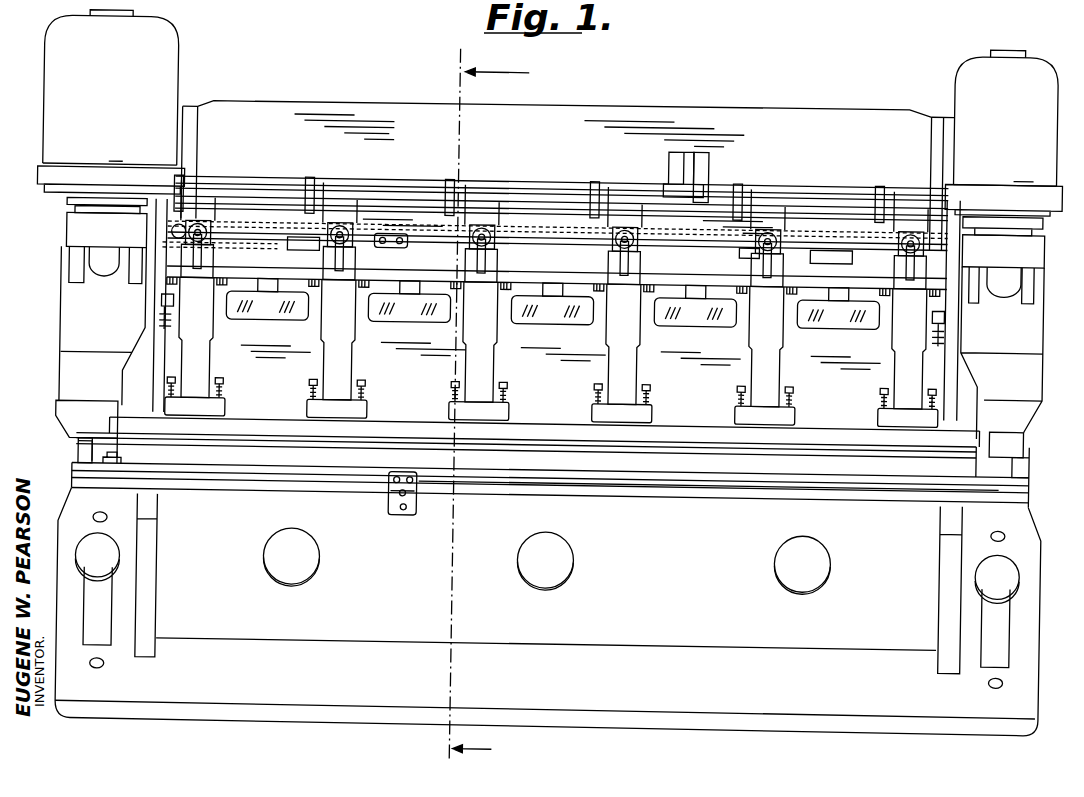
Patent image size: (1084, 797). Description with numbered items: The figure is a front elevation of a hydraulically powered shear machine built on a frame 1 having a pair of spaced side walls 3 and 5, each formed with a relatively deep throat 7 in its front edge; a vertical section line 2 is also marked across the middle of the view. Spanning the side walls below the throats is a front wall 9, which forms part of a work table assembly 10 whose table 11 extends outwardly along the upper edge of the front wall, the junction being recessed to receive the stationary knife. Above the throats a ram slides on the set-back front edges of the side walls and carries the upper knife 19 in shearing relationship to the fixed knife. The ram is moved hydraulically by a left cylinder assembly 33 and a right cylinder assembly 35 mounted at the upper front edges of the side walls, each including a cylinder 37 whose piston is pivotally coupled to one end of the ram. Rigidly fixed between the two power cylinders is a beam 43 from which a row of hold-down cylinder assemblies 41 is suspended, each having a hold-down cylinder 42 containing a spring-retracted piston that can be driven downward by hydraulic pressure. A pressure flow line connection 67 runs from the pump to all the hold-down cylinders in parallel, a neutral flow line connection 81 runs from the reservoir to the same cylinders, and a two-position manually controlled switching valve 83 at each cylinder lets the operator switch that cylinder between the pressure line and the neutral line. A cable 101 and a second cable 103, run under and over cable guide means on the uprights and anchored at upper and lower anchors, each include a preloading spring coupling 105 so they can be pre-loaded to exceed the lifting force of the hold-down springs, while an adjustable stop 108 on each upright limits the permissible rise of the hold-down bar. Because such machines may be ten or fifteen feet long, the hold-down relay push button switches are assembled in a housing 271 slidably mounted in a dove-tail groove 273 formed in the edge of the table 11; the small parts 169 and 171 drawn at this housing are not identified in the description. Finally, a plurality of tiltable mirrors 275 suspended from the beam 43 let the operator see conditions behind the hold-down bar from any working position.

The frame 1 is at (36, 435).
The section line 2 is at (500, 409).
The side wall 3 is at (79, 449).
The side wall 5 is at (1029, 430).
The throat 7 is at (91, 457).
The front wall 9 is at (1022, 542).
The work table assembly 10 is at (559, 611).
The table 11 is at (297, 472).
The upper knife 19 is at (542, 404).
The left cylinder assembly 33 is at (125, 134).
The right cylinder assembly 35 is at (1012, 124).
The cylinder 37 is at (83, 86).
The hold-down cylinder assembly 41 is at (557, 303).
The hold-down cylinder 42 is at (202, 349).
The beam 43 is at (790, 109).
The pressure flow line connection 67 is at (420, 194).
The neutral flow line connection 81 is at (342, 189).
The switching valve 83 is at (614, 249).
The cable 101 is at (442, 236).
The cable 103 is at (832, 236).
The preloading spring coupling 105 is at (312, 250).
The adjustable stop 108 is at (161, 307).
The bracket 169 is at (401, 490).
The bracket screw 171 is at (412, 506).
The housing 271 is at (390, 506).
The dove-tail groove 273 is at (484, 484).
The tiltable mirror 275 is at (412, 315).